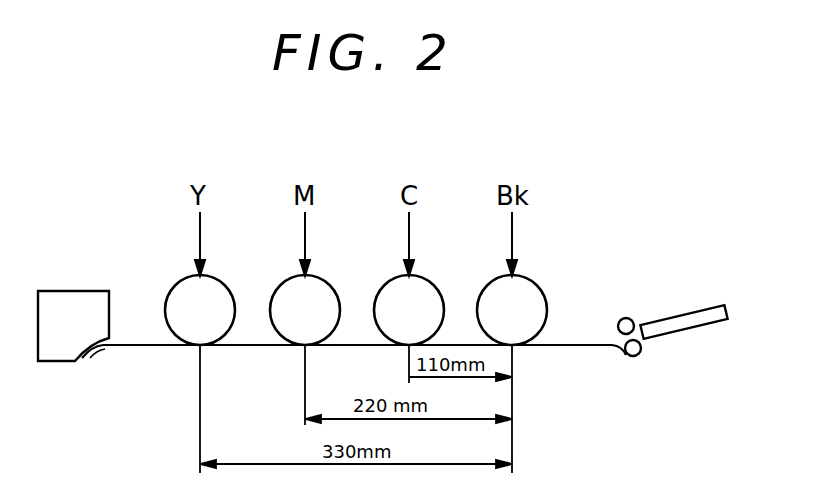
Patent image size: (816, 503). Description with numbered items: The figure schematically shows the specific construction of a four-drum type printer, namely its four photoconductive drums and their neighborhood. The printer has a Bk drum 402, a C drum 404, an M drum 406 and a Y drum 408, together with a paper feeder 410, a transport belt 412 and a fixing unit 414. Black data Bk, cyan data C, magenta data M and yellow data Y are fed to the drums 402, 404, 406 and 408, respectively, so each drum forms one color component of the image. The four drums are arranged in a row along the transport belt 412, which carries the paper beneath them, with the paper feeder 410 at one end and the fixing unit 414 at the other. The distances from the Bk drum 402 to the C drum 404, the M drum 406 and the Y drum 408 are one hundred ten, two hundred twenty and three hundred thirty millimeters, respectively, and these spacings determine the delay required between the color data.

The Bk drum 402 is at (548, 284).
The C drum 404 is at (436, 284).
The M drum 406 is at (331, 284).
The Y drum 408 is at (226, 284).
The paper feeder 410 is at (689, 303).
The transport belt 412 is at (596, 346).
The fixing unit 414 is at (75, 289).